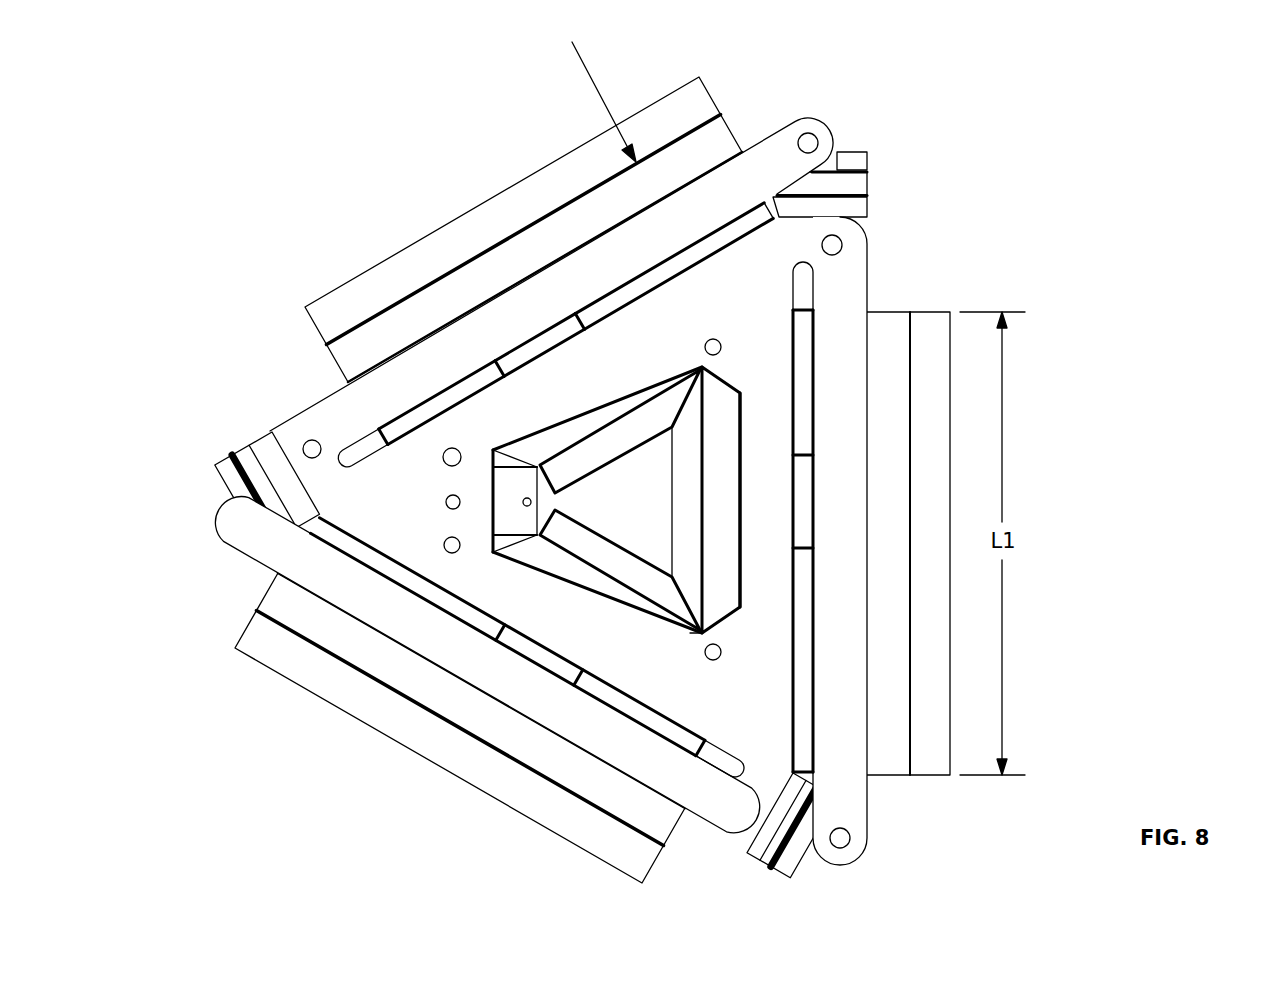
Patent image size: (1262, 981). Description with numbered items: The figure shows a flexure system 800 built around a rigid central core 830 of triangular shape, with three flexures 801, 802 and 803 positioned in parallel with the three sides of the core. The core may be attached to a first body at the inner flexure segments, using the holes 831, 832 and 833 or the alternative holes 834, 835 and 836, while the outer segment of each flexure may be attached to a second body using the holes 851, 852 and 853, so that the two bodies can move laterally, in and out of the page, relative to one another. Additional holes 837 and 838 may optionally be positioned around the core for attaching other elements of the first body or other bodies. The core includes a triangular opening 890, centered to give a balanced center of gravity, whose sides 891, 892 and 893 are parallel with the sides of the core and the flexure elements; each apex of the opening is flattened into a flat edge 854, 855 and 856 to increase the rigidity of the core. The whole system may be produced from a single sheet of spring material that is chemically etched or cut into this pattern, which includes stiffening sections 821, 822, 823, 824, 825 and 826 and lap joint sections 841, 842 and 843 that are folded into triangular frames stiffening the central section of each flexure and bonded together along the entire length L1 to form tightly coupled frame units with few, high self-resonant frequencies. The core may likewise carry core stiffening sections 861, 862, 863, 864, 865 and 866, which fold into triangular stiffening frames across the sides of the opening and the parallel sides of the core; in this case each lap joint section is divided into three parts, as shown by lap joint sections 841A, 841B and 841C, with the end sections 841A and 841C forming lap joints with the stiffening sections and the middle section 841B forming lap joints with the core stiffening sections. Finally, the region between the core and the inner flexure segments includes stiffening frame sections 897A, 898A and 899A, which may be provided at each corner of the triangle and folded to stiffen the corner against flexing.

The flexure system 800 is at (303, 105).
The flexure 801 is at (397, 383).
The flexure 802 is at (637, 765).
The flexure 803 is at (838, 740).
The stiffening section 821 is at (365, 270).
The stiffening section 822 is at (260, 667).
The stiffening section 823 is at (950, 415).
The stiffening section 824 is at (507, 263).
The stiffening section 825 is at (417, 685).
The stiffening section 826 is at (890, 488).
The rigid central core 830 is at (863, 541).
The hole 831 is at (303, 450).
The hole 832 is at (740, 815).
The hole 833 is at (843, 245).
The hole 834 is at (713, 660).
The hole 835 is at (710, 340).
The hole 836 is at (446, 502).
The additional hole 837 is at (443, 460).
The additional hole 838 is at (444, 545).
The lap joint section 841 is at (718, 243).
The lap joint section 841A is at (450, 402).
The lap joint section 841B is at (543, 347).
The lap joint section 841C is at (637, 293).
The lap joint section 842 is at (262, 560).
The lap joint section 843 is at (810, 698).
The hole 851 is at (810, 132).
The hole 852 is at (226, 524).
The hole 853 is at (852, 840).
The flat edge 854 is at (490, 483).
The flat edge 855 is at (690, 643).
The flat edge 856 is at (721, 348).
The core stiffening section 861 is at (560, 430).
The core stiffening section 862 is at (640, 425).
The core stiffening section 863 is at (723, 488).
The core stiffening section 864 is at (688, 525).
The core stiffening section 865 is at (587, 545).
The core stiffening section 866 is at (627, 614).
The opening 890 is at (617, 506).
The side of central opening 891 is at (592, 392).
The side of central opening 892 is at (565, 598).
The side of central opening 893 is at (748, 440).
The stiffening frame section 897A is at (870, 158).
The stiffening frame section 898A is at (870, 185).
The stiffening frame section 899A is at (870, 210).